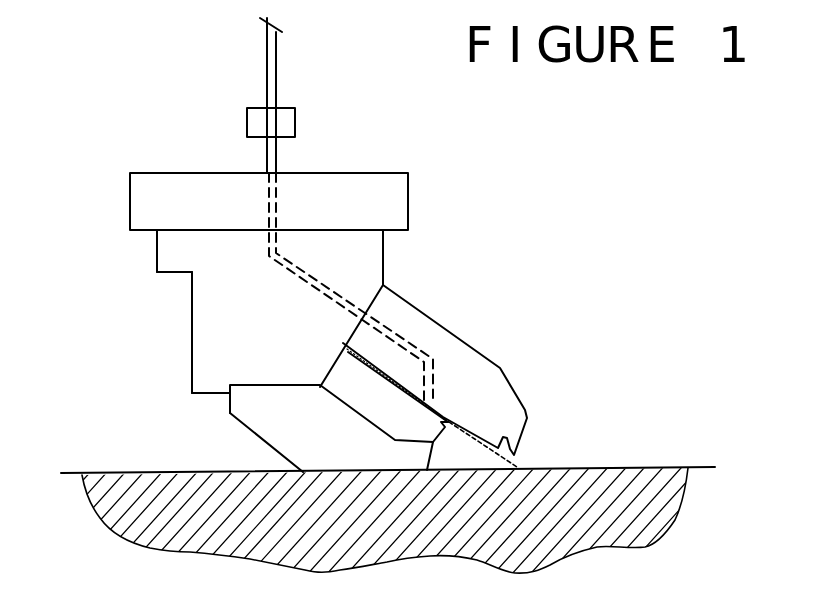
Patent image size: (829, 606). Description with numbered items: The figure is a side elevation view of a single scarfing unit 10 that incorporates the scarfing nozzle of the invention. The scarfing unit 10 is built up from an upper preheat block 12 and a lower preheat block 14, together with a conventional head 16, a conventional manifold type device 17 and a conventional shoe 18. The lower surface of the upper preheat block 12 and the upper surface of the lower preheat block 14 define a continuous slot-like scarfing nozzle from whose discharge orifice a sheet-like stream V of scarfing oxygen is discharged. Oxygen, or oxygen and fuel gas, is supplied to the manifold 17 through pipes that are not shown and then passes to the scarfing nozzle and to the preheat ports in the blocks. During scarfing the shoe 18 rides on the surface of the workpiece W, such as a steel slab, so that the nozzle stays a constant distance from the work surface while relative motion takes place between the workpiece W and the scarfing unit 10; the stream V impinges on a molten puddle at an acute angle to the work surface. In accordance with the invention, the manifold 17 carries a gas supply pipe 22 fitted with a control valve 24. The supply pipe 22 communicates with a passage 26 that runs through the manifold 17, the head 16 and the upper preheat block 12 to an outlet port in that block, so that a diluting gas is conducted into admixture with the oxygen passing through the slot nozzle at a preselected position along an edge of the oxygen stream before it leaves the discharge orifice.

The scarfing unit 10 is at (202, 173).
The upper preheat block 12 is at (468, 348).
The lower preheat block 14 is at (332, 357).
The head 16 is at (192, 312).
The manifold type device 17 is at (130, 200).
The shoe 18 is at (262, 442).
The gas supply pipe 22 is at (277, 160).
The control valve 24 is at (295, 108).
The passage 26 is at (312, 275).
The sheet-like stream of scarfing oxygen V is at (515, 456).
The workpiece W is at (643, 467).